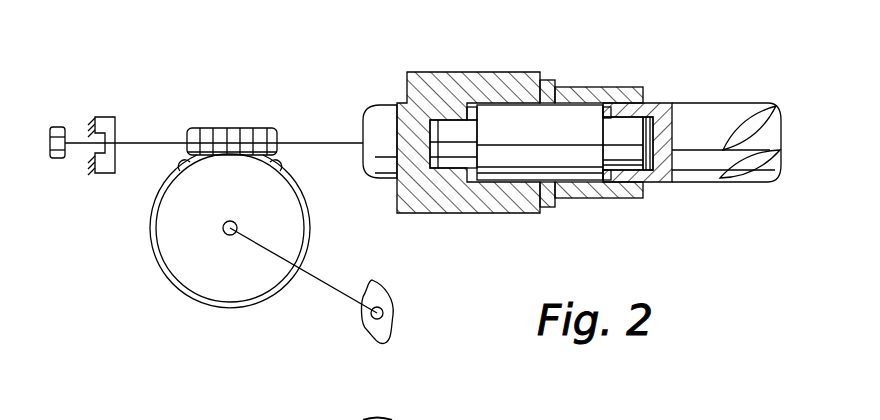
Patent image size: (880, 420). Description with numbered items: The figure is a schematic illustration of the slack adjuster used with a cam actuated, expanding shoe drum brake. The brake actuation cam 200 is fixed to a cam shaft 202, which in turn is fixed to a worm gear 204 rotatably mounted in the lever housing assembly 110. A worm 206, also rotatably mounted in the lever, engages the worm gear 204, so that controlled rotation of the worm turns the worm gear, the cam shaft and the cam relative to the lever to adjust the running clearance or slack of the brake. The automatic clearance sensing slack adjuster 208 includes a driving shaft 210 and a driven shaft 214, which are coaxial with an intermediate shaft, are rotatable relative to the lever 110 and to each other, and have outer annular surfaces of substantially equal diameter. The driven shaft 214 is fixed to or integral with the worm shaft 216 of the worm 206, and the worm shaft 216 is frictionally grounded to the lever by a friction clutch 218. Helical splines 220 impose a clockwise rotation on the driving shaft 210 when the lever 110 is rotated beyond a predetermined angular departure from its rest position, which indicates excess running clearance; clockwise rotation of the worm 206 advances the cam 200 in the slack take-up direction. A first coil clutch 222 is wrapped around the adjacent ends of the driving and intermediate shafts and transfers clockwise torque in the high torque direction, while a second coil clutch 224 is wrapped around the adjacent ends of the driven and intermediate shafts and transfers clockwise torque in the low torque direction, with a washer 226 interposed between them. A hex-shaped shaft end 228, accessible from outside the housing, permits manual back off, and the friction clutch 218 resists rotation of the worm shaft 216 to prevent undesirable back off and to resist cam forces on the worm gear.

The lever housing assembly 110 is at (90, 113).
The brake actuation cam 200 is at (393, 316).
The cam shaft 202 is at (320, 278).
The worm gear 204 is at (183, 273).
The worm 206 is at (210, 130).
The automatic clearance sensing slack adjuster 208 is at (456, 58).
The driving shaft 210 is at (682, 117).
The driven shaft 214 is at (377, 120).
The worm shaft 216 is at (288, 142).
The friction clutch 218 is at (115, 115).
The helical splines 220 is at (743, 120).
The first coil clutch 222 is at (627, 87).
The second coil clutch 224 is at (525, 73).
The washer 226 is at (553, 80).
The hex-shaped shaft end 228 is at (58, 127).